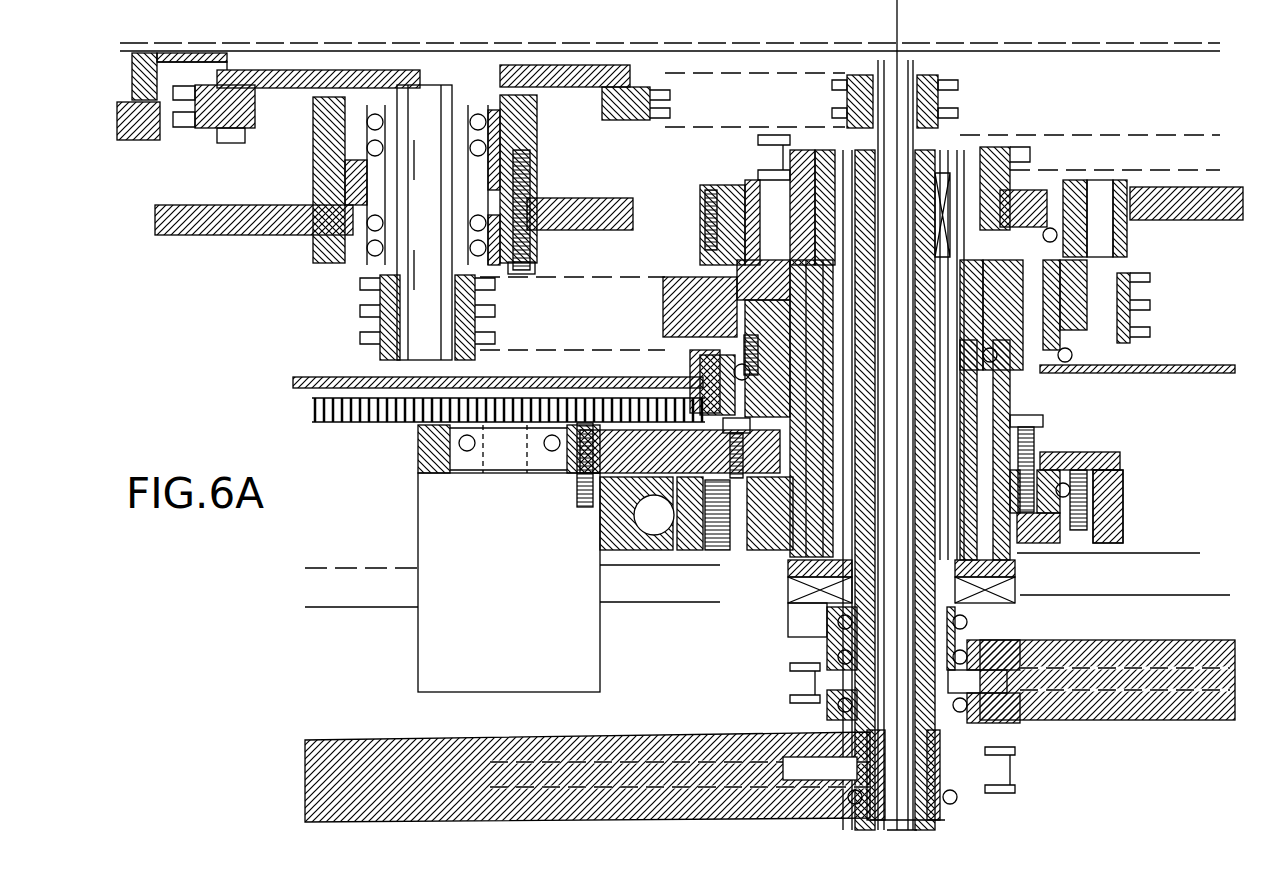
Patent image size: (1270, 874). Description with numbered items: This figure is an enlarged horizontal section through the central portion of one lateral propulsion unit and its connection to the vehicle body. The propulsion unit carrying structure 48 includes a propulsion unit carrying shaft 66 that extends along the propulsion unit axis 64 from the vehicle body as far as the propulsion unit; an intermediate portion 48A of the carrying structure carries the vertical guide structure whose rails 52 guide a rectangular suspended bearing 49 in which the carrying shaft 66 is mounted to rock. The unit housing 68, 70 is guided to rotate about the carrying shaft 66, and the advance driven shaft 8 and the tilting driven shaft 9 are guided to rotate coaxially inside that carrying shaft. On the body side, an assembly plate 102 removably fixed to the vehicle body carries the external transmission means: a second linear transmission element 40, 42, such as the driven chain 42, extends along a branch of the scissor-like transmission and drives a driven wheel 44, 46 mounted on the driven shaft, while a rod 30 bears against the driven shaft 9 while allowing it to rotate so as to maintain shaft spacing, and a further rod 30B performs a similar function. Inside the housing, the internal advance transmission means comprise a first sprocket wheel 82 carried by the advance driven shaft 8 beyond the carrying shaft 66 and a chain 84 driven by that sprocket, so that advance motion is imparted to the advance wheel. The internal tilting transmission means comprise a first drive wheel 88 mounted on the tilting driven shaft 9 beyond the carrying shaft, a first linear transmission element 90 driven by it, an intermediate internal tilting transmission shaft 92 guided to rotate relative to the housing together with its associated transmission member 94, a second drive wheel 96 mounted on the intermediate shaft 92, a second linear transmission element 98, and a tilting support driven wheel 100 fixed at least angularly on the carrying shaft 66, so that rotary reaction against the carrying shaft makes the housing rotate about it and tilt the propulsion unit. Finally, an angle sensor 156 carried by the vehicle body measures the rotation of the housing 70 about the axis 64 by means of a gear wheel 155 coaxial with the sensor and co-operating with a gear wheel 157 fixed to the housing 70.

The advance driven shaft 8 is at (930, 390).
The tilting driven shaft 9 is at (890, 90).
The rod 30 is at (330, 780).
The rod 30B is at (1185, 645).
The second linear transmission element 40 is at (800, 662).
The driven chain 42 is at (648, 760).
The driven wheel 44 is at (790, 676).
The driven wheel 46 is at (1018, 775).
The propulsion unit carrying structure 48 is at (1125, 515).
The intermediate portion of the carrying structure 48A is at (1140, 516).
The suspended bearing 49 is at (1040, 445).
The vertical guide structure rails 52 is at (760, 556).
The propulsion unit axis 64 is at (898, 18).
The propulsion unit carrying shaft 66 is at (965, 425).
The unit housing 68 is at (1168, 375).
The propulsion unit housing 70 is at (235, 222).
The first sprocket wheel 82 is at (993, 150).
The chain 84 is at (755, 140).
The first drive wheel 88 is at (948, 80).
The first linear transmission element 90 is at (742, 73).
The intermediate internal tilting transmission shaft 92 is at (432, 118).
The internal tilting transmission element 94 is at (636, 82).
The second drive wheel 96 is at (378, 300).
The second linear transmission element 98 is at (600, 275).
The tilting support driven wheel 100 is at (665, 300).
The assembly plate 102 is at (355, 590).
The gear wheel 155 is at (382, 435).
The angle sensor 156 is at (445, 650).
The gear wheel 157 is at (700, 382).